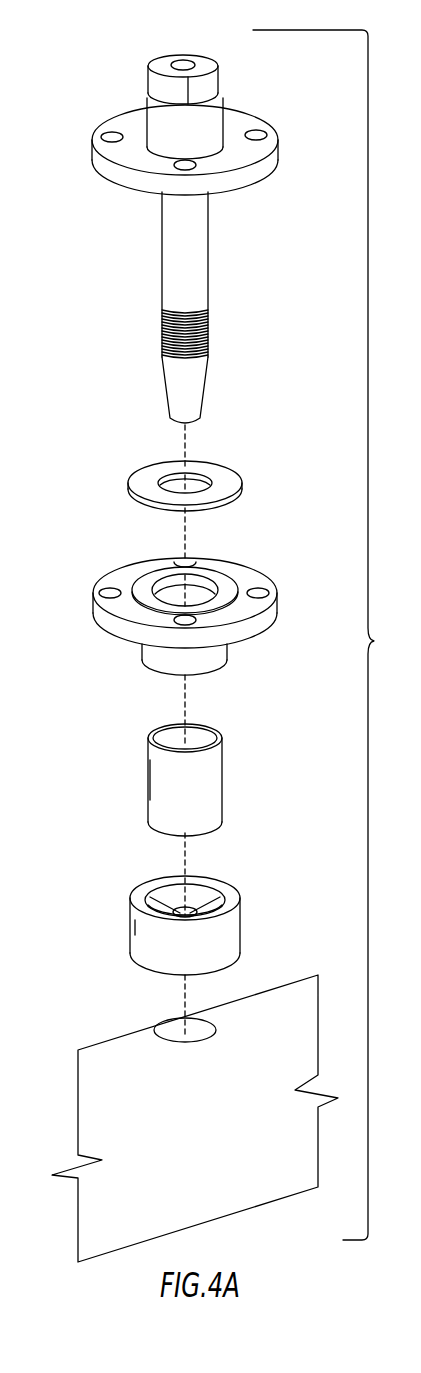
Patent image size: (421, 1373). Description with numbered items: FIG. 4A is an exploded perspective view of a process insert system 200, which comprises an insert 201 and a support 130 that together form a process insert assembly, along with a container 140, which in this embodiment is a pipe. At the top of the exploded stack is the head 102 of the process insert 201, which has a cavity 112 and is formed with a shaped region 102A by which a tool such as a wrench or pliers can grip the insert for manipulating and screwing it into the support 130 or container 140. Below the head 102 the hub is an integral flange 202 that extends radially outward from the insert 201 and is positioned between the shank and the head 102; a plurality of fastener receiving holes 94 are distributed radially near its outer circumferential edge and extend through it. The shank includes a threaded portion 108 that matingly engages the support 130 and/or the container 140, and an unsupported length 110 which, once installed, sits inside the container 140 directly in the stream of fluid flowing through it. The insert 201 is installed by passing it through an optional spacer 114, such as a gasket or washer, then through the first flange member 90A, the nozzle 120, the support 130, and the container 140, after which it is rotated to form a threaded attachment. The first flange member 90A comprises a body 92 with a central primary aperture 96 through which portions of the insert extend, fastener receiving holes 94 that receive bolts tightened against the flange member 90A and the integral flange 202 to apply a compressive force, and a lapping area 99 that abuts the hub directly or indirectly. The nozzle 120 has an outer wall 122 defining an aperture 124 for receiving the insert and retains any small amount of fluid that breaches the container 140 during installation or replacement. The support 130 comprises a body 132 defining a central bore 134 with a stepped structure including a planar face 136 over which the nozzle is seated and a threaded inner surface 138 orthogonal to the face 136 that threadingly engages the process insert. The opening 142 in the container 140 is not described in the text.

The process insert system 200 is at (374, 641).
The process insert 201 is at (131, 251).
The shaped region 102A is at (203, 87).
The cavity 112 is at (178, 60).
The head 102 is at (207, 123).
The integral flange 202 is at (137, 117).
The fastener receiving holes 94 is at (172, 158).
The threaded portion 108 is at (208, 333).
The unsupported length 110 is at (183, 397).
The spacer 114 is at (220, 477).
The first flange member 90A is at (219, 565).
The lapping area 99 is at (145, 590).
The primary aperture 96 is at (177, 603).
The body 92 is at (132, 633).
The nozzle 120 is at (223, 780).
The aperture 124 is at (192, 743).
The outer surface or wall 122 is at (160, 795).
The support 130 is at (245, 920).
The body 132 is at (138, 918).
The central bore 134 is at (177, 888).
The planar face 136 is at (221, 895).
The inner surface 138 is at (155, 895).
The container 140 is at (287, 1030).
The plate hole 142 is at (175, 1023).